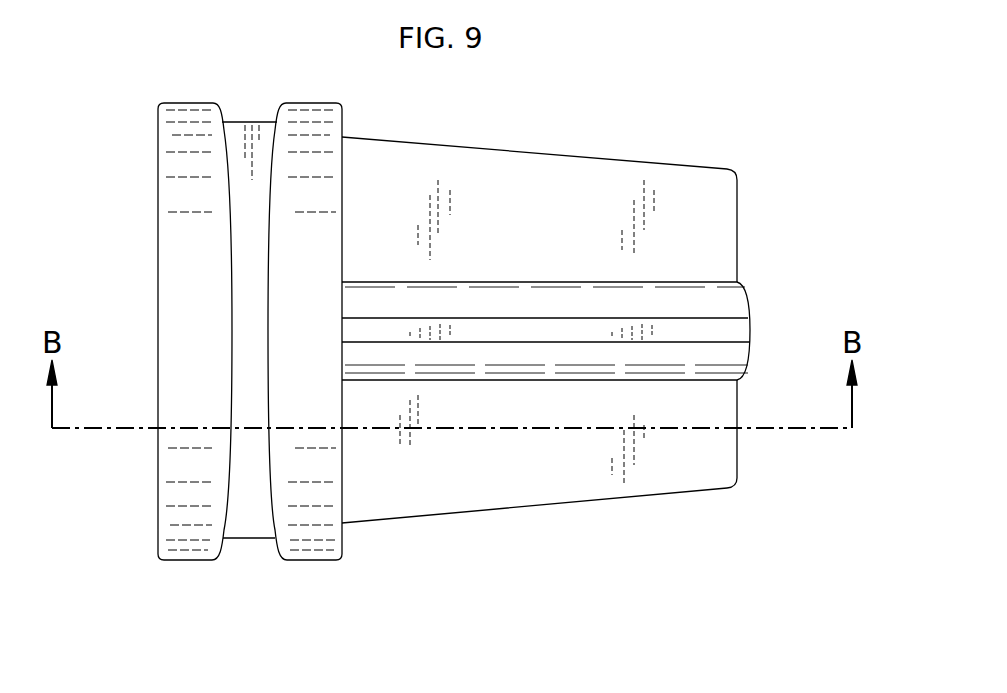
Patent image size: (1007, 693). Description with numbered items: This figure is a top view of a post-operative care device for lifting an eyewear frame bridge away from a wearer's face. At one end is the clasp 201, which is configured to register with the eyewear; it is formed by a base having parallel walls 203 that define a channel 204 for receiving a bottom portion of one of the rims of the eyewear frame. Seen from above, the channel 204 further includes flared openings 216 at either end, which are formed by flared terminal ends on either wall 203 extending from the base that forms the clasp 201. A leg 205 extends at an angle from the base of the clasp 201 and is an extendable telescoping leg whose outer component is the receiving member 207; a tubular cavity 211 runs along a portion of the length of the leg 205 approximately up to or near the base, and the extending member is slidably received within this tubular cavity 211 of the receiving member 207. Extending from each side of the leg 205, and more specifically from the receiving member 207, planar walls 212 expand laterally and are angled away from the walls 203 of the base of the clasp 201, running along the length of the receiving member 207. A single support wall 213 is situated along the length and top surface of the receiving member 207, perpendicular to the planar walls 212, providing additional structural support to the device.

The clasp 201 is at (295, 353).
The parallel walls 203 is at (158, 288).
The channel 204 is at (250, 480).
The leg 205 is at (600, 365).
The receiving member 207 is at (540, 321).
The tubular cavity 211 is at (600, 248).
The planar walls 212 is at (552, 153).
The support wall 213 is at (669, 322).
The flared openings 216 is at (283, 110).